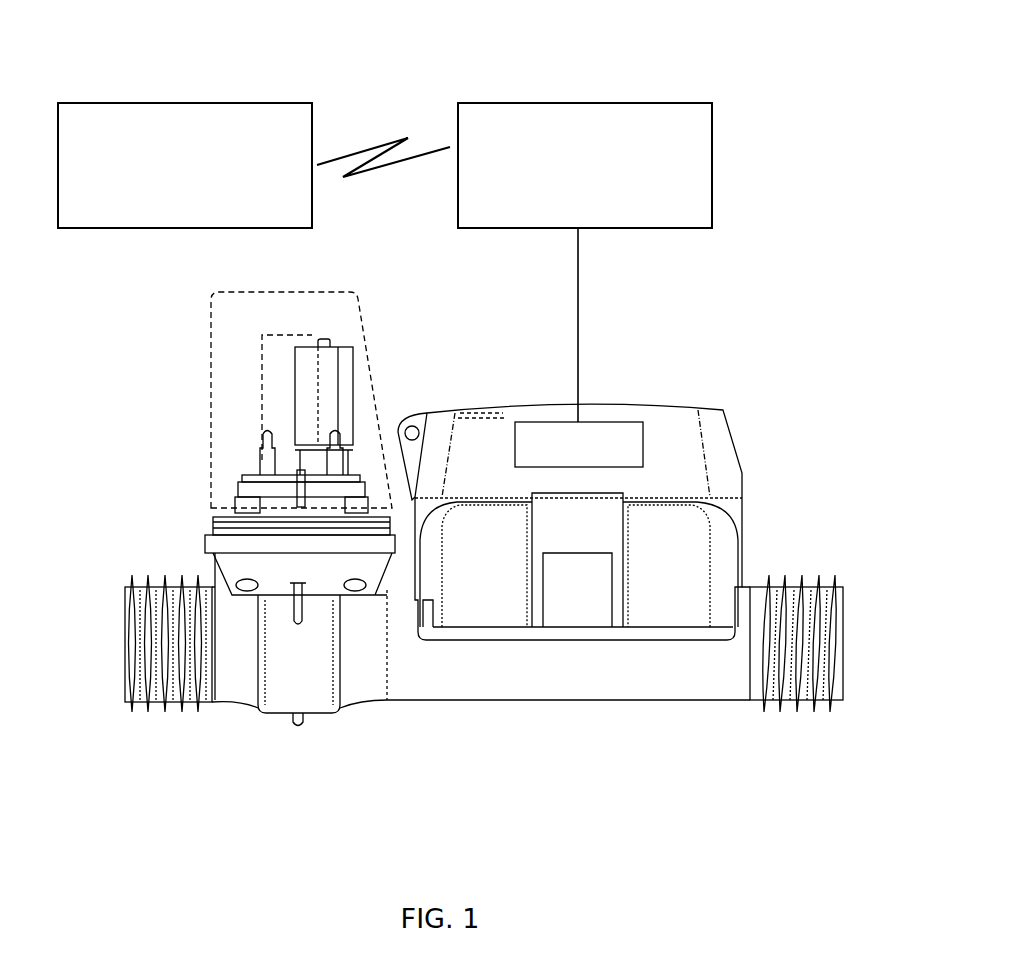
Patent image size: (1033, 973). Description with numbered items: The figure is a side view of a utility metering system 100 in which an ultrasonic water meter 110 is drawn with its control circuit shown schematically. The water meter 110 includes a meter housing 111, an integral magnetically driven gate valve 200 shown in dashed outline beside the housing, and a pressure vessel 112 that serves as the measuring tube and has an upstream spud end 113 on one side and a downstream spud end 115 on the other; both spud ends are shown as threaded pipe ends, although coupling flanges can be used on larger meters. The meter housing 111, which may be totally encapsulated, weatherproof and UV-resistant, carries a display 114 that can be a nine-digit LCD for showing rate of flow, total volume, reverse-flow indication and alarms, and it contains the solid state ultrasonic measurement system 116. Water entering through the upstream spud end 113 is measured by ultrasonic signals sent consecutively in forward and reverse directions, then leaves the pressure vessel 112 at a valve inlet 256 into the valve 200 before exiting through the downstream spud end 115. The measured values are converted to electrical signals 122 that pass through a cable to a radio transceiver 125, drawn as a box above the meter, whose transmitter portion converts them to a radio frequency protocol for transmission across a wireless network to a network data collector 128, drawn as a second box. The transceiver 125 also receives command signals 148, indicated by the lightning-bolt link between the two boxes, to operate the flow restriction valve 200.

The utility metering system 100 is at (788, 25).
The ultrasonic water meter 110 is at (790, 423).
The meter housing 111 is at (743, 522).
The pressure vessel 112 is at (607, 702).
The upstream spud end 113 is at (807, 700).
The display 114 is at (478, 413).
The downstream spud end 115 is at (143, 700).
The ultrasonic measurement system 116 is at (600, 460).
The signals 122 is at (580, 300).
The radio transceiver 125 is at (530, 102).
The network data collector 128 is at (130, 102).
The command signals 148 is at (378, 140).
The magnetically driven gate valve 200 is at (251, 438).
The valve inlet 256 is at (387, 653).